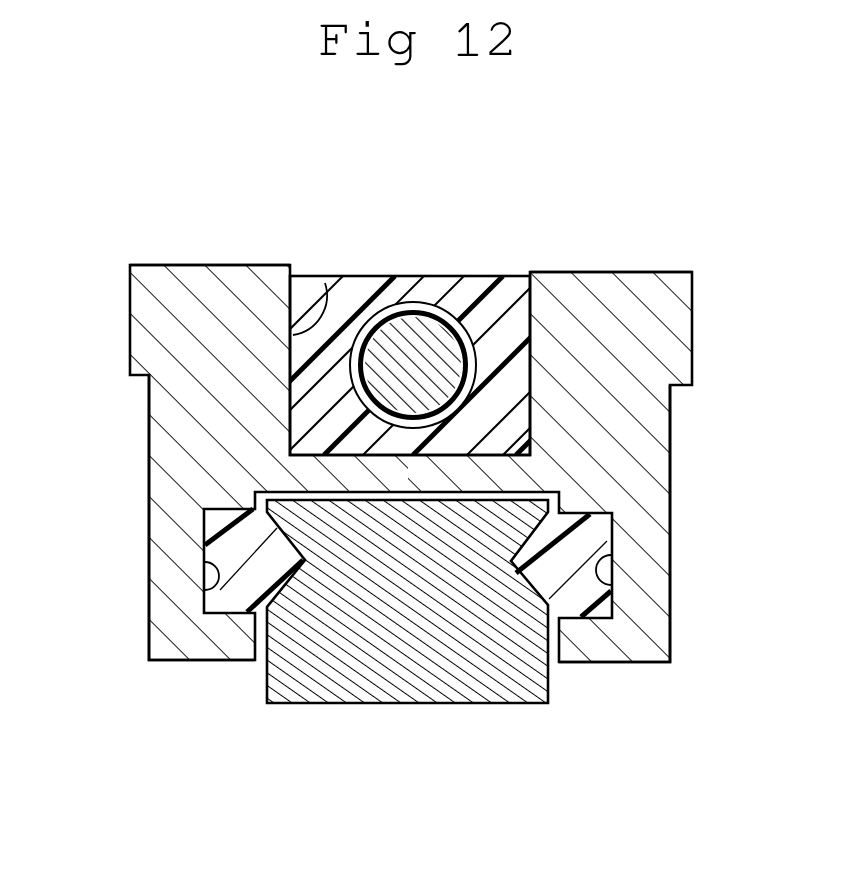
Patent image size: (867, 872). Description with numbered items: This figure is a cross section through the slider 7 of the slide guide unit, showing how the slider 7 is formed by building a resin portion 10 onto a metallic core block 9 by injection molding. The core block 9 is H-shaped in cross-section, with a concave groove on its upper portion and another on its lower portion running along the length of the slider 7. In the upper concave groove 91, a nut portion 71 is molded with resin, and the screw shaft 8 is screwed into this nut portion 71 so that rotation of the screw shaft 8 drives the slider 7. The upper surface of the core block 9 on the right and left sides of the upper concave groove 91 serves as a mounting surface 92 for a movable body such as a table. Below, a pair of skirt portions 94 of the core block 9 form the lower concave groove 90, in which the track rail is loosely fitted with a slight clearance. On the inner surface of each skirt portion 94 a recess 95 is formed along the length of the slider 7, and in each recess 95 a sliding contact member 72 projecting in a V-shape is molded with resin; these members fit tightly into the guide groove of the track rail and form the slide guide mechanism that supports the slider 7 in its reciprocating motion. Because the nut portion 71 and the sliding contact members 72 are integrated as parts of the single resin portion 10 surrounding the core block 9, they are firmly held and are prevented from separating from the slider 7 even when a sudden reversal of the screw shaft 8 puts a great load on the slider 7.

The slider 7 is at (661, 260).
The screw shaft 8 is at (408, 330).
The core block 9 is at (655, 428).
The resin portion 10 is at (415, 468).
The nut portion 71 is at (470, 277).
The sliding contact member 72 is at (243, 588).
The lower concave groove 90 is at (258, 634).
The upper concave groove 91 is at (324, 281).
The mounting surface 92 is at (188, 274).
The skirt portion 94 is at (148, 474).
The recess 95 is at (215, 590).